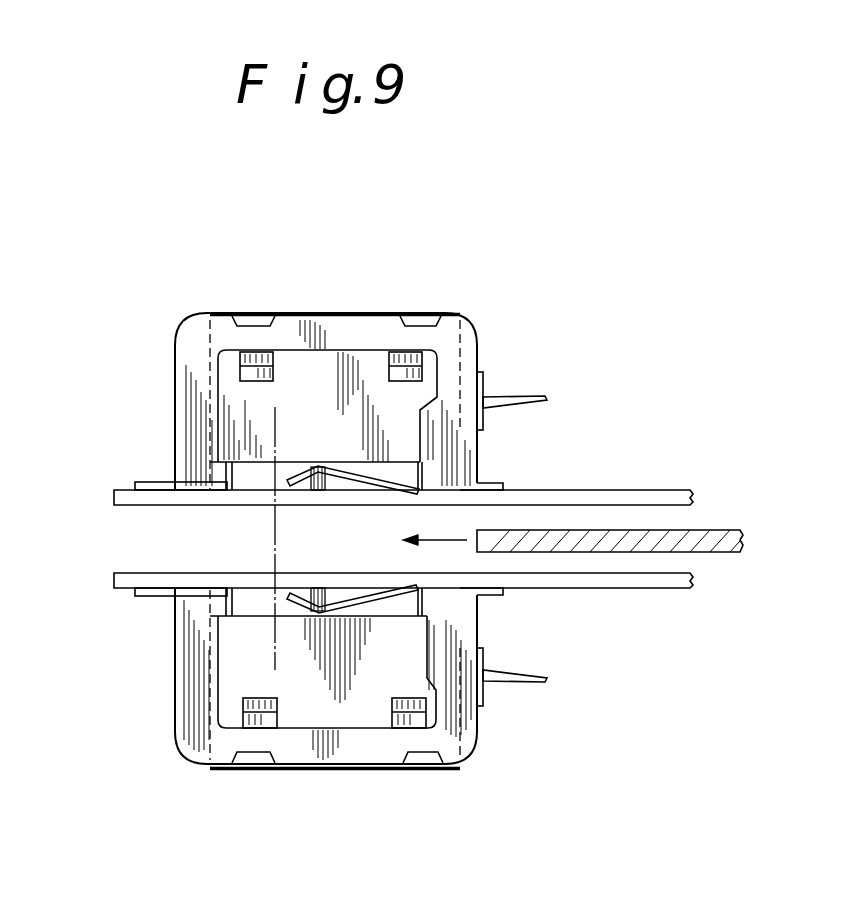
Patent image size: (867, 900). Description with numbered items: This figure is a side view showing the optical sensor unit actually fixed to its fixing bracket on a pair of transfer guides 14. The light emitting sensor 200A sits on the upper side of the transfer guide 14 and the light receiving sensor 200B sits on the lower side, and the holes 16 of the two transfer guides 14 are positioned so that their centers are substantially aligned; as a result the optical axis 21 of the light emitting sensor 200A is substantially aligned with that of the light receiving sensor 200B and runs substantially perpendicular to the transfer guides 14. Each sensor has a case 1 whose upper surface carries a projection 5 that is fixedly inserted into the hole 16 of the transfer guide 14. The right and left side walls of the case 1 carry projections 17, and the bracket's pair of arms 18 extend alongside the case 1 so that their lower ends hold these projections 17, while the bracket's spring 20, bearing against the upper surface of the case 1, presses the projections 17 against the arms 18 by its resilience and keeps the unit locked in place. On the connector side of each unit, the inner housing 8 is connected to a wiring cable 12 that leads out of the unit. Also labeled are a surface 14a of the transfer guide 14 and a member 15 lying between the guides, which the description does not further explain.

The light emitting sensor 200A is at (240, 309).
The light receiving sensor 200B is at (248, 778).
The case 1 is at (235, 373).
The projection 5 is at (222, 478).
The inner housing 8 is at (483, 378).
The wiring cable 12 is at (530, 393).
The transfer guide 14 is at (115, 500).
The plate surface 14a is at (123, 507).
The inserted member 15 is at (725, 545).
The hole 16 is at (323, 587).
The projection 17 is at (262, 353).
The arms 18 is at (185, 392).
The spring 20 is at (395, 463).
The optical axis 21 is at (275, 523).